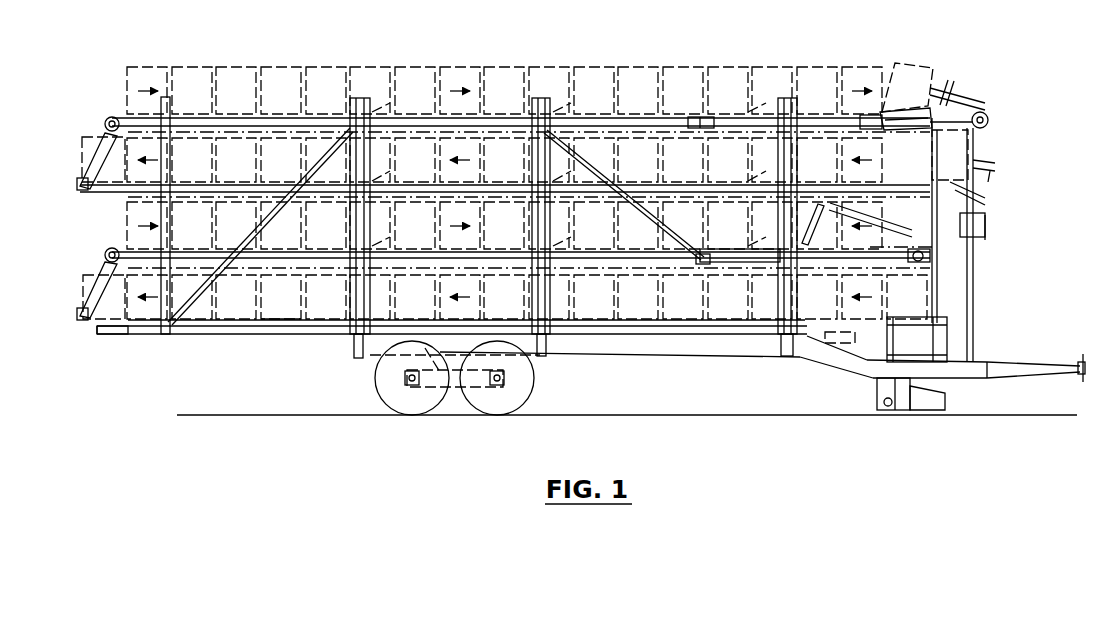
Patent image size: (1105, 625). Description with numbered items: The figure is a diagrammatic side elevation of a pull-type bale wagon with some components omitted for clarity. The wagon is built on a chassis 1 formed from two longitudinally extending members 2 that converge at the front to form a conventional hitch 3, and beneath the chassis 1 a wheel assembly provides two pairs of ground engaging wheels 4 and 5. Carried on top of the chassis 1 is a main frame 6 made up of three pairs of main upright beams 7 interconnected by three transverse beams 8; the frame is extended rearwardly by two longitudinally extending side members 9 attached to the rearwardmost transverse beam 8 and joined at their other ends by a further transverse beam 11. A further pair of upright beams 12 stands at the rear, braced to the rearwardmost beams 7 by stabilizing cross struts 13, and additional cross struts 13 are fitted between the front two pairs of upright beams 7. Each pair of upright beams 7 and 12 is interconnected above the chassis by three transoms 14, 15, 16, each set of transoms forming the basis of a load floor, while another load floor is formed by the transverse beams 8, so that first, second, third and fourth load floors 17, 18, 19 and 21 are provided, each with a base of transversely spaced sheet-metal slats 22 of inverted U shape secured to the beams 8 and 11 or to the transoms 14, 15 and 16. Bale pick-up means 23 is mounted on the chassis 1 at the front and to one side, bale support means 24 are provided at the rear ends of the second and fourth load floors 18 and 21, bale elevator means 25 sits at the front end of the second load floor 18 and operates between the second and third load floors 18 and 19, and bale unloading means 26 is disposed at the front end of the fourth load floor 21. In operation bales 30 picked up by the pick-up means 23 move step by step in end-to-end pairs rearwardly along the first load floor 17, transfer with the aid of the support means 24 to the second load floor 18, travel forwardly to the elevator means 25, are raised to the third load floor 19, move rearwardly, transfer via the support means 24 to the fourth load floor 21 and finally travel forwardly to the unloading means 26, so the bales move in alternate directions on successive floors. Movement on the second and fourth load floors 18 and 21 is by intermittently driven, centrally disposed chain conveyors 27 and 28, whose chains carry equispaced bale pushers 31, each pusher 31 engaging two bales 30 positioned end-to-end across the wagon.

The chassis 1 is at (627, 362).
The longitudinally extending members 2 is at (661, 356).
The hitch 3 is at (1083, 362).
The ground engaging wheels 4 is at (447, 413).
The ground engaging wheels 5 is at (531, 411).
The main frame 6 is at (314, 336).
The main upright beams 7 is at (360, 98).
The transverse beams 8 is at (356, 360).
The side members 9 is at (205, 330).
The further transverse beam 11 is at (97, 338).
The further pair of upright beams 12 is at (166, 97).
The stabilizing cross struts 13 is at (270, 212).
The transom 14 is at (388, 239).
The transom 15 is at (388, 173).
The transom 16 is at (391, 105).
The first load floor 17 is at (112, 296).
The second load floor 18 is at (108, 253).
The third load floor 19 is at (113, 174).
The fourth load floor 21 is at (108, 116).
The slats 22 is at (282, 319).
The bale pick-up means 23 is at (873, 396).
The bale support means 24 is at (75, 184).
The bale elevator means 25 is at (948, 246).
The bale unloading means 26 is at (925, 112).
The chain conveyor 27 is at (700, 264).
The chain conveyor 28 is at (694, 130).
The bales 30 is at (488, 107).
The bale pushers 31 is at (124, 96).